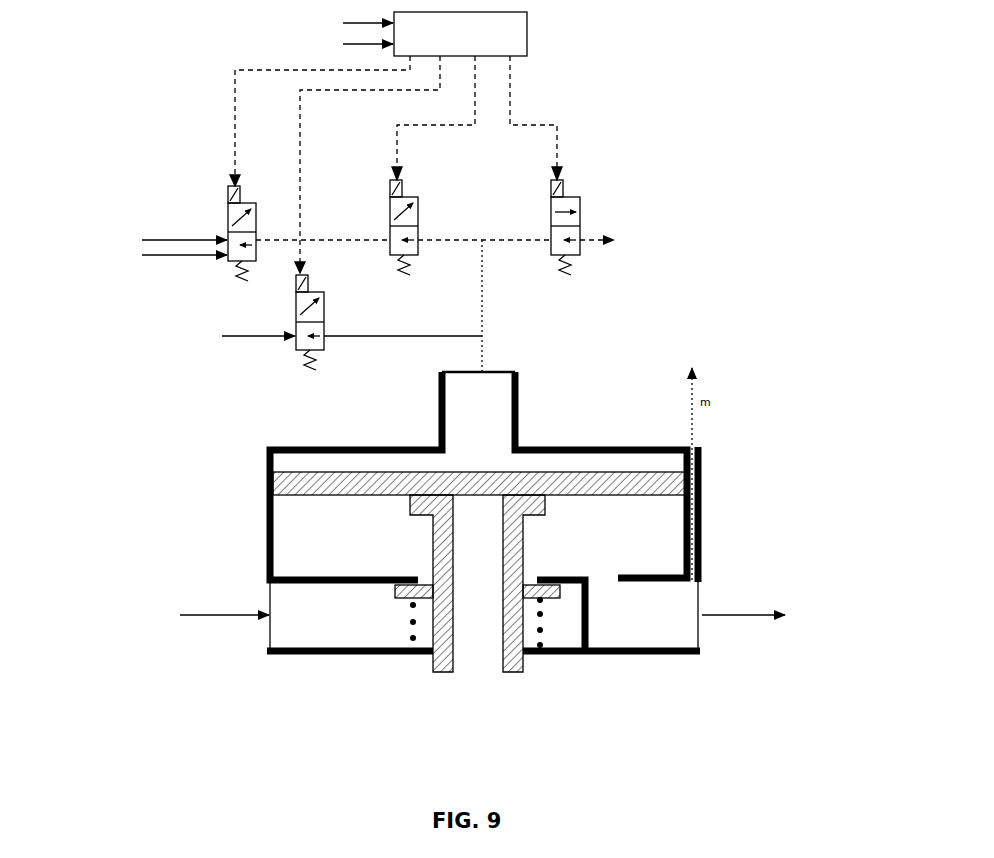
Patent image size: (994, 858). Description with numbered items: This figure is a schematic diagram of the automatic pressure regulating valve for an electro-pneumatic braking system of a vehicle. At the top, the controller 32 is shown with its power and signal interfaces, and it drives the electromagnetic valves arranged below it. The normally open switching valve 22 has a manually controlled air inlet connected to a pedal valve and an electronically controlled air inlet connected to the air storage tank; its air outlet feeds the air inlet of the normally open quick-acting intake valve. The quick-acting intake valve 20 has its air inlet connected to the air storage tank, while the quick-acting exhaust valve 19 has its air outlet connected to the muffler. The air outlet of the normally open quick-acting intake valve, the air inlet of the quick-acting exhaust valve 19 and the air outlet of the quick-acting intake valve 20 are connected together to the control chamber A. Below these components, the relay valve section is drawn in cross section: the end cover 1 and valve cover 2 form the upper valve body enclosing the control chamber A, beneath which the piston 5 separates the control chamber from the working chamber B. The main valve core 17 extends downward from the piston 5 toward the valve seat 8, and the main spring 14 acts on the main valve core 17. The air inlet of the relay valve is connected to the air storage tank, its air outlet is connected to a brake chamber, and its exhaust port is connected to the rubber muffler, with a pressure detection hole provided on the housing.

The controller 32 is at (510, 37).
The end cover 1 is at (425, 222).
The quick-acting exhaust valve 19 is at (590, 238).
The normally open switching valve 22 is at (227, 215).
The quick-acting intake valve 20 is at (297, 316).
The valve cover 2 is at (600, 446).
The piston 5 is at (310, 470).
The main valve core 17 is at (523, 550).
The main spring 14 is at (543, 630).
The valve seat 8 is at (307, 647).